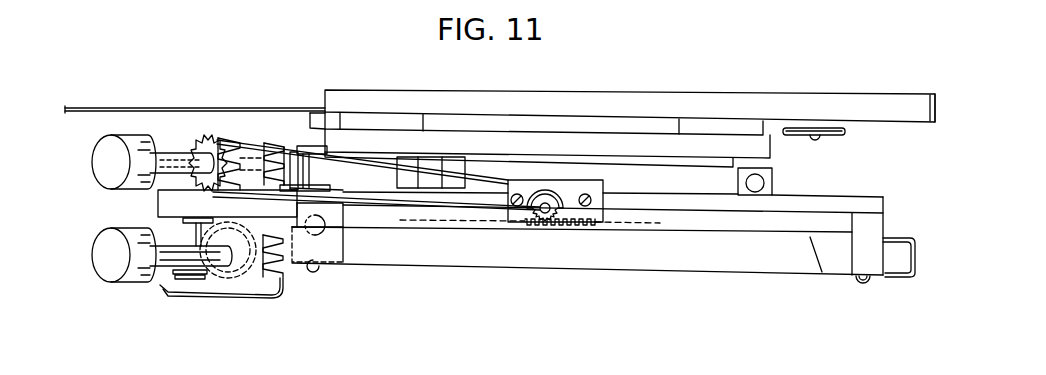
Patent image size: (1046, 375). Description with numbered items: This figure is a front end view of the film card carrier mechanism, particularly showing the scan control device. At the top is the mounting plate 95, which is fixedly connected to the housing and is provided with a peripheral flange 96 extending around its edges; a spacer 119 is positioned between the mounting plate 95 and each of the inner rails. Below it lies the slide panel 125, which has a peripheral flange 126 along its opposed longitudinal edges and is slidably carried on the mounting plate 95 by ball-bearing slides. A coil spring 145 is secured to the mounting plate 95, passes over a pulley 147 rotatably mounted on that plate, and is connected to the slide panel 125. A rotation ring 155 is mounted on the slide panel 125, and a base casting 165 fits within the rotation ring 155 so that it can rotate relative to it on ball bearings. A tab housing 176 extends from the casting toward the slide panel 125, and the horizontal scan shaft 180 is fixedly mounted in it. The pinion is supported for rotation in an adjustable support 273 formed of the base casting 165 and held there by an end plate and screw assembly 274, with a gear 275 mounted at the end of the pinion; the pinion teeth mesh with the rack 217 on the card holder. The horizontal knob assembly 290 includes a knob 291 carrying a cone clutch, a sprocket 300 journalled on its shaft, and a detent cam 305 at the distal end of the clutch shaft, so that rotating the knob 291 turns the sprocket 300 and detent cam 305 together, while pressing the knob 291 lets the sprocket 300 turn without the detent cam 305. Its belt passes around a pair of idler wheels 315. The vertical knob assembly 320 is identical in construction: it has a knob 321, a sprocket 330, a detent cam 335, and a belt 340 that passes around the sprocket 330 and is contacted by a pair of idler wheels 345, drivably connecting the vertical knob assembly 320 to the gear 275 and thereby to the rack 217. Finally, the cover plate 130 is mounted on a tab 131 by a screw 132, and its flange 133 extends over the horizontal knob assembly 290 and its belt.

The mounting plate 95 is at (893, 104).
The peripheral flange 96 is at (862, 108).
The spacer 119 is at (387, 101).
The slide panel 125 is at (493, 127).
The peripheral flange 126 is at (552, 144).
The cover plate 130 is at (752, 262).
The tab 131 is at (876, 258).
The screw 132 is at (858, 281).
The flange 133 is at (270, 300).
The coil spring 145 is at (843, 132).
The pulley 147 is at (795, 126).
The rotation ring 155 is at (717, 183).
The base casting 165 is at (883, 206).
The tab housing 176 is at (773, 178).
The horizontal scan shaft 180 is at (765, 183).
The rack 217 is at (583, 227).
The adjustable support 273 is at (562, 186).
The end plate and screw assembly 274 is at (590, 197).
The gear 275 is at (532, 213).
The horizontal knob assembly 290 is at (113, 285).
The knob 291 is at (99, 259).
The sprocket 300 is at (230, 278).
The detent cam 305 is at (280, 278).
The idler wheels 315 is at (172, 292).
The vertical knob assembly 320 is at (88, 168).
The knob 321 is at (107, 156).
The sprocket 330 is at (200, 136).
The detent cam 335 is at (258, 140).
The belt 340 is at (378, 160).
The idler wheels 345 is at (290, 143).